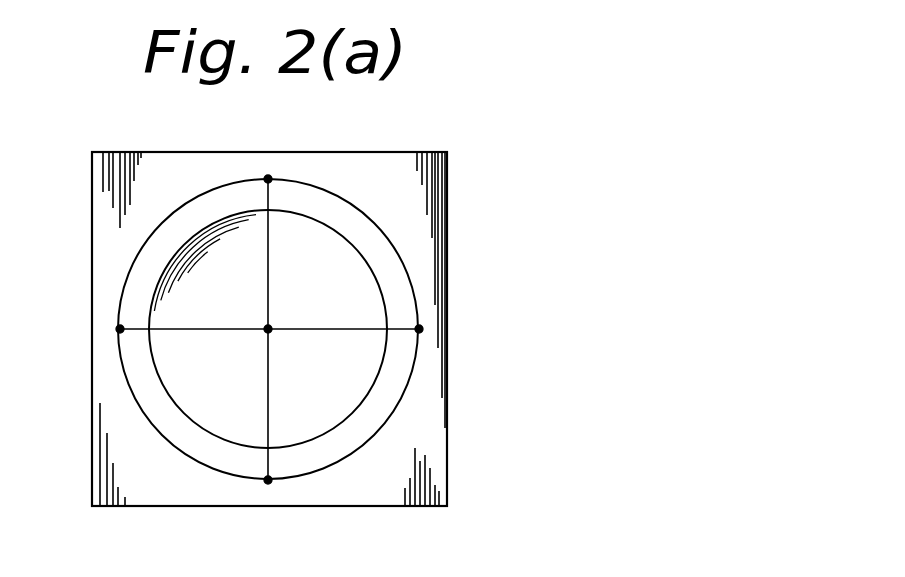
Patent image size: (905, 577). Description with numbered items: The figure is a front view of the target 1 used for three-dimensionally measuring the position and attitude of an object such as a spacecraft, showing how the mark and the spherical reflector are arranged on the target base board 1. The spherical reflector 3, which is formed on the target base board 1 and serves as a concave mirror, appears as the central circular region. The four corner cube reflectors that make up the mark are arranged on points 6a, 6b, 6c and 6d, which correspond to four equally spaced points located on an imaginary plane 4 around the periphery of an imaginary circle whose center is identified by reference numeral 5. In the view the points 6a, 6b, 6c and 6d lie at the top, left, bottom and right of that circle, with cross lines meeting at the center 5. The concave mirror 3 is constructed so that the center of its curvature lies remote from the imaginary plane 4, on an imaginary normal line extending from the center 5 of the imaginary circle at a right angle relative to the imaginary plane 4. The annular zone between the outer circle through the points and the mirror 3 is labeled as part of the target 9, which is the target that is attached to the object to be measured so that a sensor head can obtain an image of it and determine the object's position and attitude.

The target base board 1 is at (442, 468).
The spherical reflector 3 is at (377, 383).
The imaginary plane 4 is at (432, 215).
The center of imaginary circle 5 is at (268, 329).
The point 6a is at (268, 179).
The point 6b is at (120, 329).
The point 6c is at (268, 480).
The point 6d is at (419, 329).
The target 9 is at (415, 238).